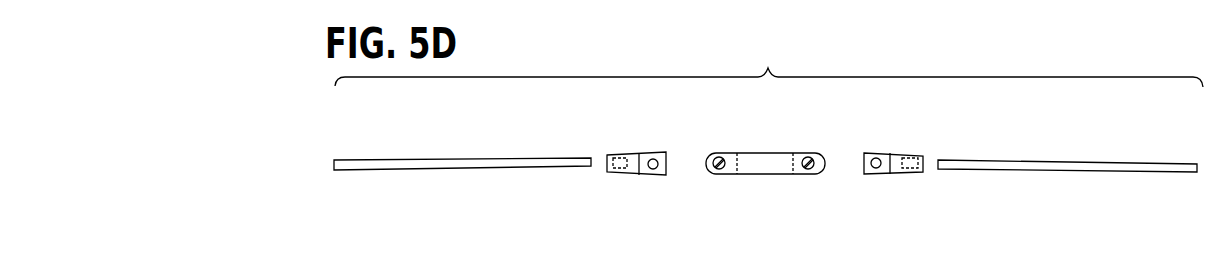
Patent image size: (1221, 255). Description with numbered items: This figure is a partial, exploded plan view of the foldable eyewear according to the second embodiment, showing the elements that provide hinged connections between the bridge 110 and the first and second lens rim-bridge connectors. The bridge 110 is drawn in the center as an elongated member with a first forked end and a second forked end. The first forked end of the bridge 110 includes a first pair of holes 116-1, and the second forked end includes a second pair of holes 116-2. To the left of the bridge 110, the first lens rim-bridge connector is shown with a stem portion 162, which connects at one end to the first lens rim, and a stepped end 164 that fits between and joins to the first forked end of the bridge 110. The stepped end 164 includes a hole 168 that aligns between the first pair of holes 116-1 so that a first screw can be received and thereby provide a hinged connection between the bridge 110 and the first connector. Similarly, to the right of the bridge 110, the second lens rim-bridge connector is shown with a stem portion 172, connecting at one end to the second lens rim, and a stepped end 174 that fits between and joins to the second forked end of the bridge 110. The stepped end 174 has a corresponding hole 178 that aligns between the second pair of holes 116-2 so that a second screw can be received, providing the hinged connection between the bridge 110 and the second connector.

The bridge 110 is at (762, 180).
The first pair of holes 116-1 is at (719, 152).
The second pair of holes 116-2 is at (808, 152).
The stem portion 162 is at (503, 170).
The stepped end 164 is at (650, 180).
The hole 168 is at (653, 158).
The stem portion 172 is at (1033, 175).
The stepped end 174 is at (880, 180).
The right tab hole 178 is at (877, 157).